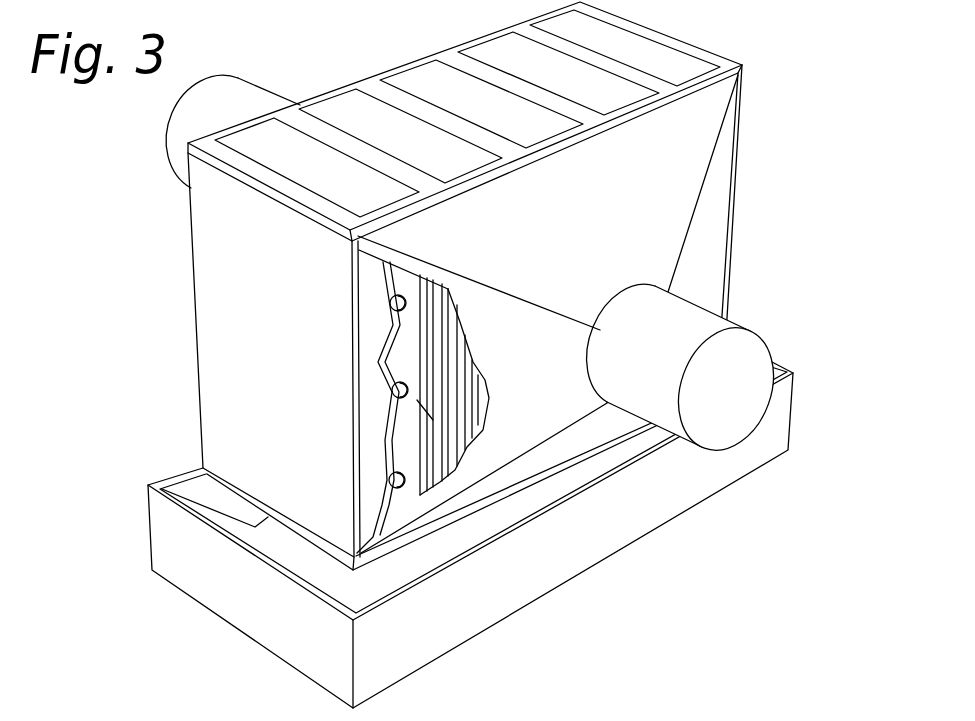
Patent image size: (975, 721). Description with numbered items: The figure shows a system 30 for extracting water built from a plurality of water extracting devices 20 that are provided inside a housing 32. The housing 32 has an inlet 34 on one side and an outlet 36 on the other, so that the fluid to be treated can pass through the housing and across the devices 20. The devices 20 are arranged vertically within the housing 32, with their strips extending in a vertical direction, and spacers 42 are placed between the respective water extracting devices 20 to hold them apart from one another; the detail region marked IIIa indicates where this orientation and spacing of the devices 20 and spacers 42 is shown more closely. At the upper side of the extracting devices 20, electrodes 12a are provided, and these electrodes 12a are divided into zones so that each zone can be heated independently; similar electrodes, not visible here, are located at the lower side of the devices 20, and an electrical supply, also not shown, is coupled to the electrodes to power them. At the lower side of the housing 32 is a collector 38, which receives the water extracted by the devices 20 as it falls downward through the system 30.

The system for extracting water 30 is at (170, 290).
The electrodes 12a is at (693, 62).
The inlet 34 is at (238, 97).
The housing 32 is at (684, 154).
The water extracting device 20 is at (450, 292).
The spacers 42 is at (392, 391).
The outlet 36 is at (708, 327).
The collector 38 is at (622, 551).
The section view indicator IIIa is at (353, 457).